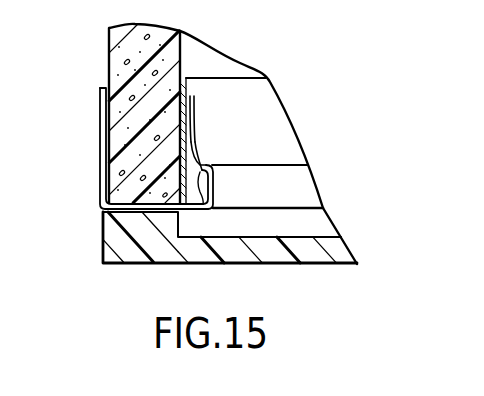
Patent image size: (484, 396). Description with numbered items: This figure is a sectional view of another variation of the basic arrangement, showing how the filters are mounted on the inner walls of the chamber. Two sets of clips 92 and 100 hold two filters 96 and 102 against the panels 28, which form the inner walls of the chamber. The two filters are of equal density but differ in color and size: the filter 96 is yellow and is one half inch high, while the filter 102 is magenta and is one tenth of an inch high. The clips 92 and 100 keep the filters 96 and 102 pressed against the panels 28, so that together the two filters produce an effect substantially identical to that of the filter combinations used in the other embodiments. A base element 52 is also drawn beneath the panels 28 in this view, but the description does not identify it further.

The panel 28 is at (108, 43).
The filter 96 is at (184, 78).
The clip 92 is at (195, 118).
The filter 102 is at (193, 151).
The clip 100 is at (213, 188).
The base slab 52 is at (325, 243).